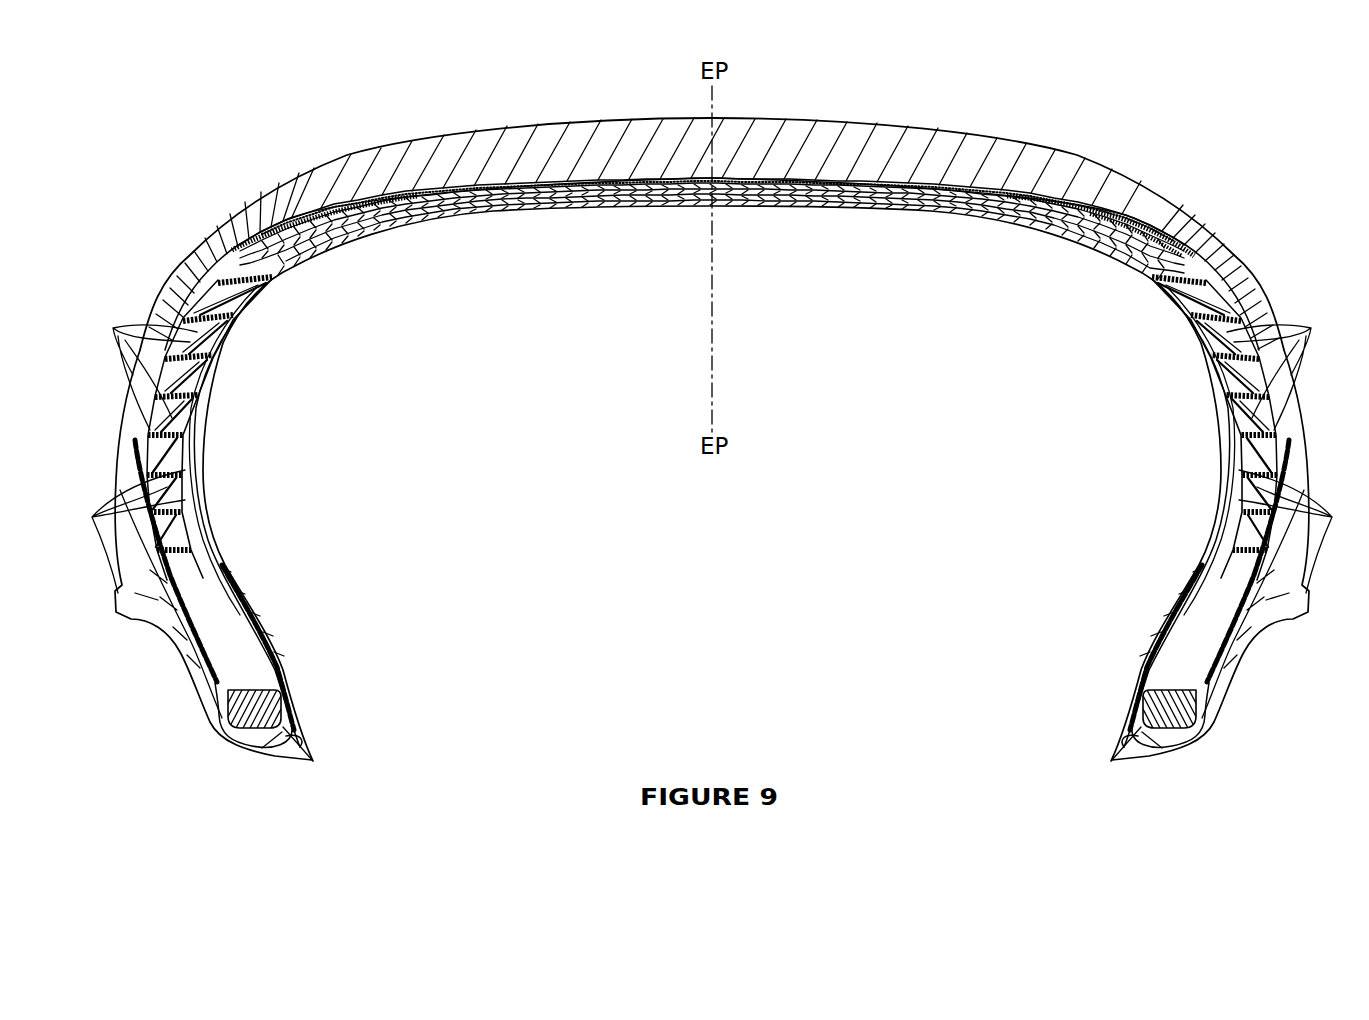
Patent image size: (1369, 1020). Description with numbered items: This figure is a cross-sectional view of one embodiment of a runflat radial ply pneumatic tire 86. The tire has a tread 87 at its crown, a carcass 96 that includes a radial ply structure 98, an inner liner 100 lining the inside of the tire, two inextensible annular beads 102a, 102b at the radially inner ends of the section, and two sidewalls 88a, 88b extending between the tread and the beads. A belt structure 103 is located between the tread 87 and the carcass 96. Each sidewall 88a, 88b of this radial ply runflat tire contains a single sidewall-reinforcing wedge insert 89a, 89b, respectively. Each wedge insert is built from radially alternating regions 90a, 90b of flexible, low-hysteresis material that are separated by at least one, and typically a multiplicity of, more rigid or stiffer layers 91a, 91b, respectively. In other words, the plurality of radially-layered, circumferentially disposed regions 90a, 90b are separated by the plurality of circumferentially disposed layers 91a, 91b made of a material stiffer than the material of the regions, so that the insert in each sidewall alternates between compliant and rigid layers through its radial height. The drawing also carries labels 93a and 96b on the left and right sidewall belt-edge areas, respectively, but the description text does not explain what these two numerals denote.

The runflat radial ply pneumatic tire 86 is at (1068, 118).
The tread 87 is at (889, 126).
The sidewall 88a is at (158, 324).
The sidewall 88b is at (1258, 334).
The sidewall-reinforcing wedge insert 89a is at (182, 445).
The sidewall-reinforcing wedge insert 89b is at (1243, 447).
The regions of flexible, low-hysteresis material 90a is at (188, 375).
The regions of flexible, low-hysteresis material 90b is at (1240, 375).
The more rigid layers 91a is at (141, 447).
The more rigid layers 91b is at (1284, 447).
The belt edge structure 93a is at (214, 416).
The carcass 96 is at (656, 203).
The belt ply edge 96b is at (1205, 404).
The radial ply structure 98 is at (789, 203).
The inner liner 100 is at (1010, 225).
The inextensible annular bead 102a is at (247, 712).
The inextensible annular bead 102b is at (1177, 712).
The belt structure 103 is at (743, 182).